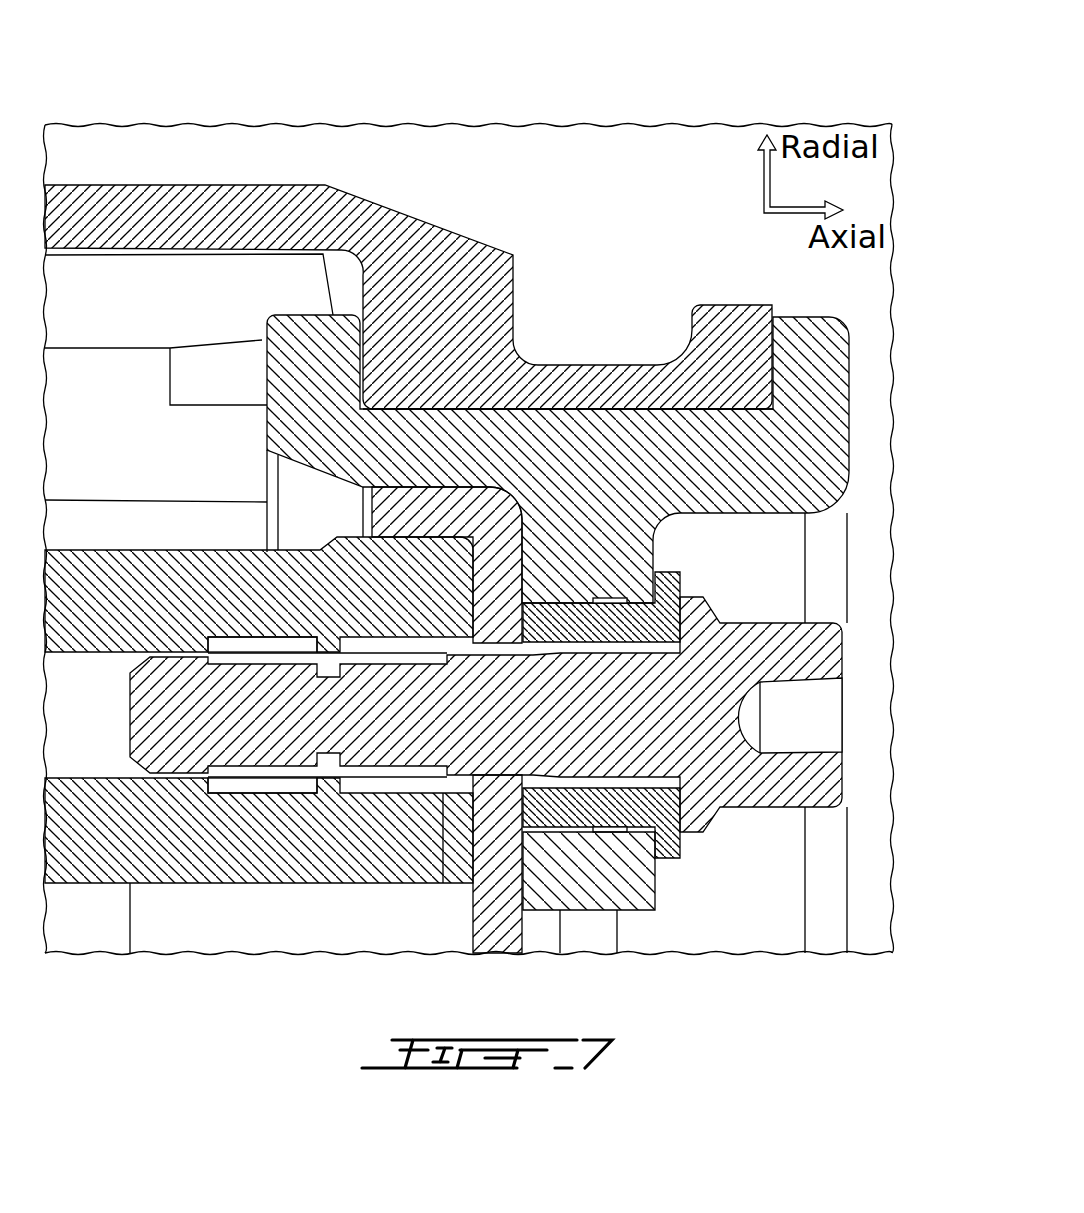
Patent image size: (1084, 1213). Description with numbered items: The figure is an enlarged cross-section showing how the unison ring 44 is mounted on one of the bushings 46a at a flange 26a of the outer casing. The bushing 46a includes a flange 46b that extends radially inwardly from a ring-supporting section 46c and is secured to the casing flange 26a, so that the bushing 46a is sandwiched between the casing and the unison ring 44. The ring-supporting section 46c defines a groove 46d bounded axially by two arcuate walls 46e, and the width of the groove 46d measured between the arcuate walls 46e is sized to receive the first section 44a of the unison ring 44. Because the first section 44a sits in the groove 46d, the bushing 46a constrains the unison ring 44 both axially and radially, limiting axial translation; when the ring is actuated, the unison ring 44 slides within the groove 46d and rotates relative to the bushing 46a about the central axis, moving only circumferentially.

The unison ring 44 is at (243, 164).
The first section 44a is at (498, 370).
The bushing 46a is at (809, 362).
The flange 46b is at (613, 562).
The ring-supporting section 46c is at (797, 468).
The groove 46d is at (733, 407).
The arcuate walls 46e is at (300, 333).
The flange 26a is at (495, 597).